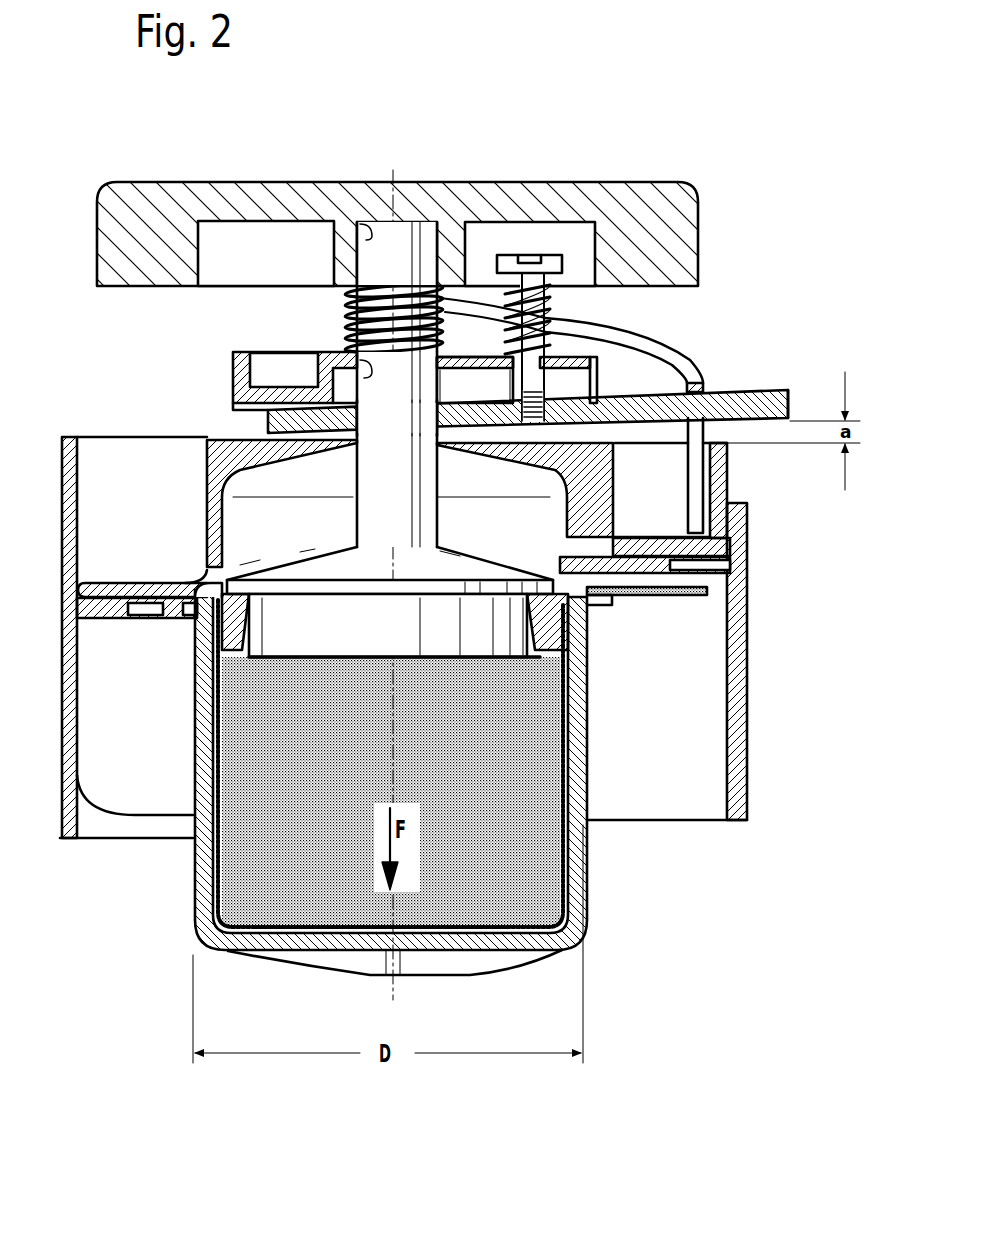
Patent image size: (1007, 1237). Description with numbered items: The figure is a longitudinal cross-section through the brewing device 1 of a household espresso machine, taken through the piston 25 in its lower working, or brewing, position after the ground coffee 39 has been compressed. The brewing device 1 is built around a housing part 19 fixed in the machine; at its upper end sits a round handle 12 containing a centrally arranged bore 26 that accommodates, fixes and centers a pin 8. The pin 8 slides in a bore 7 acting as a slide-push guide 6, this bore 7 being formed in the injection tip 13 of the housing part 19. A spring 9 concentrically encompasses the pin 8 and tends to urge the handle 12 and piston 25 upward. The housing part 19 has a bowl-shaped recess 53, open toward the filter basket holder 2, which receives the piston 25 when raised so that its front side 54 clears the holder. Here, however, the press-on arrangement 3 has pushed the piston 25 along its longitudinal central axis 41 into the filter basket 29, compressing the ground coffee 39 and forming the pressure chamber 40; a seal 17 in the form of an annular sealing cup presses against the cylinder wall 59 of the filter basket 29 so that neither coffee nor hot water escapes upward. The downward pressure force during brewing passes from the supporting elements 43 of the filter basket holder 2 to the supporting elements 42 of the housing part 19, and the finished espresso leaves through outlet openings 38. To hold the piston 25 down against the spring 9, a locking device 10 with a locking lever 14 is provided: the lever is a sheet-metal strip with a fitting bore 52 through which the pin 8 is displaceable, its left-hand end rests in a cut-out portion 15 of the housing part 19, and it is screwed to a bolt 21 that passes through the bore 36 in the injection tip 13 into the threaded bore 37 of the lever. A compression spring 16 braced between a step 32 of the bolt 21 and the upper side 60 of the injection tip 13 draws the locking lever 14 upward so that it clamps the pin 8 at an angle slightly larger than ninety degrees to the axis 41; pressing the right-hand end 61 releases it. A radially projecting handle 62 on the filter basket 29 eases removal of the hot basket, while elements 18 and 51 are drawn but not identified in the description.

The brewing device 1 is at (76, 390).
The filter basket holder 2 is at (414, 585).
The press-on arrangement 3 is at (430, 201).
The slide-push guide 6 is at (352, 301).
The bore 7 is at (249, 360).
The pin 8 is at (360, 478).
The spring 9 is at (345, 322).
The locking device 10 is at (491, 382).
The handle 12 is at (463, 207).
The injection tip 13 is at (237, 362).
The locking lever 14 is at (713, 408).
The cut-out portion 15 is at (255, 427).
The compression spring 16 is at (575, 341).
The seal 17 is at (217, 627).
The bottom cover 18 is at (297, 925).
The housing part 19 is at (730, 476).
The bolt 21 is at (570, 270).
The piston 25 is at (478, 612).
The bore 26 is at (360, 222).
The filter basket 29 is at (425, 766).
The step 32 is at (488, 222).
The bore 36 is at (517, 361).
The threaded bore 37 is at (553, 417).
The outlet openings 38 is at (400, 973).
The ground coffee 39 is at (540, 740).
The pressure chamber 40 is at (253, 755).
The longitudinal central axis 41 is at (393, 168).
The supporting elements 42 is at (100, 612).
The supporting elements 43 is at (107, 583).
The ring 51 is at (248, 412).
The fitting bore 52 is at (447, 400).
The bowl-shaped recess 53 is at (228, 508).
The front side 54 is at (328, 657).
The cylinder wall 59 is at (558, 858).
The upper side 60 is at (640, 337).
The right-hand end 61 is at (792, 400).
The handle 62 is at (693, 597).